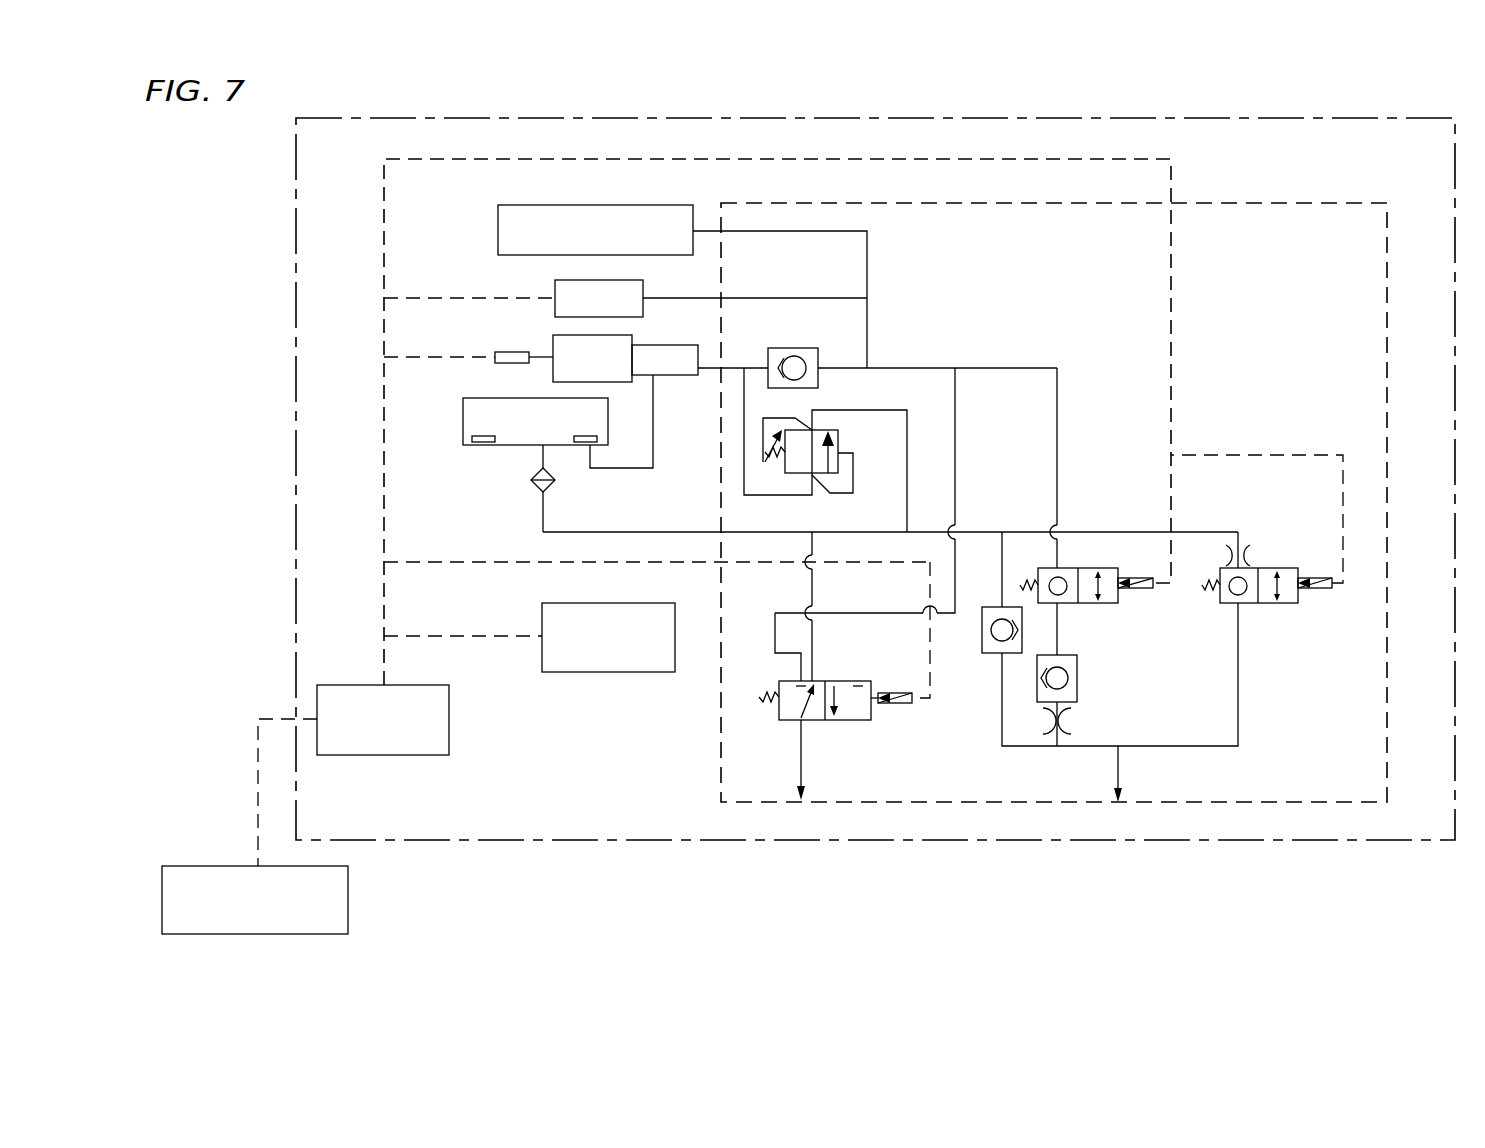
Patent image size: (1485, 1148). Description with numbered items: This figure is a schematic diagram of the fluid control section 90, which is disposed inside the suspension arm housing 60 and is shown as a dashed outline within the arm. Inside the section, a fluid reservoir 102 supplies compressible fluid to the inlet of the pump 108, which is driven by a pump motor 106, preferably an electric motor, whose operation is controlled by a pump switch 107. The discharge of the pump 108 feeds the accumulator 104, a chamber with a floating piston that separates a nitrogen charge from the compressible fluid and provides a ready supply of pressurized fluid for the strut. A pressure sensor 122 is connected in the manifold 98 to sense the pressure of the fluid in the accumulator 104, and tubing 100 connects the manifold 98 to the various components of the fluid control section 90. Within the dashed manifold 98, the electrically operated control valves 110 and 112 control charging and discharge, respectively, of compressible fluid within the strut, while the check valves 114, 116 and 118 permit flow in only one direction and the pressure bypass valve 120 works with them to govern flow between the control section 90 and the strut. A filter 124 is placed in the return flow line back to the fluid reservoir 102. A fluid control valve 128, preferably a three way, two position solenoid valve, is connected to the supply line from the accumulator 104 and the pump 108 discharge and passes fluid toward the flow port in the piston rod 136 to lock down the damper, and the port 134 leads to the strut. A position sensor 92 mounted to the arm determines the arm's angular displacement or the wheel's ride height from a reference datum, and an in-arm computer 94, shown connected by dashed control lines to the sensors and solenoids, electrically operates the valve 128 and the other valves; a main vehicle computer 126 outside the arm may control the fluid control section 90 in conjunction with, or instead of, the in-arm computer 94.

The suspension arm housing 60 is at (290, 184).
The fluid control section 90 is at (377, 184).
The position sensor 92 is at (553, 603).
The in-arm computer 94 is at (360, 685).
The fluid manifold 98 is at (706, 724).
The tubing 100 is at (707, 368).
The fluid reservoir 102 is at (507, 402).
The accumulator 104 is at (527, 208).
The pump motor 106 is at (570, 335).
The pump switch 107 is at (495, 352).
The pump 108 is at (648, 345).
The control valve 110 is at (1085, 603).
The control valve 112 is at (1265, 603).
The check valve 114 is at (982, 653).
The check valve 116 is at (1077, 690).
The check valve 118 is at (780, 350).
The pressure bypass valve 120 is at (838, 447).
The pressure sensor 122 is at (565, 285).
The filter 124 is at (532, 482).
The main vehicle computer 126 is at (207, 868).
The fluid control valve 128 is at (866, 680).
The hydraulic port 134 is at (1120, 793).
The piston rod 136 is at (810, 792).